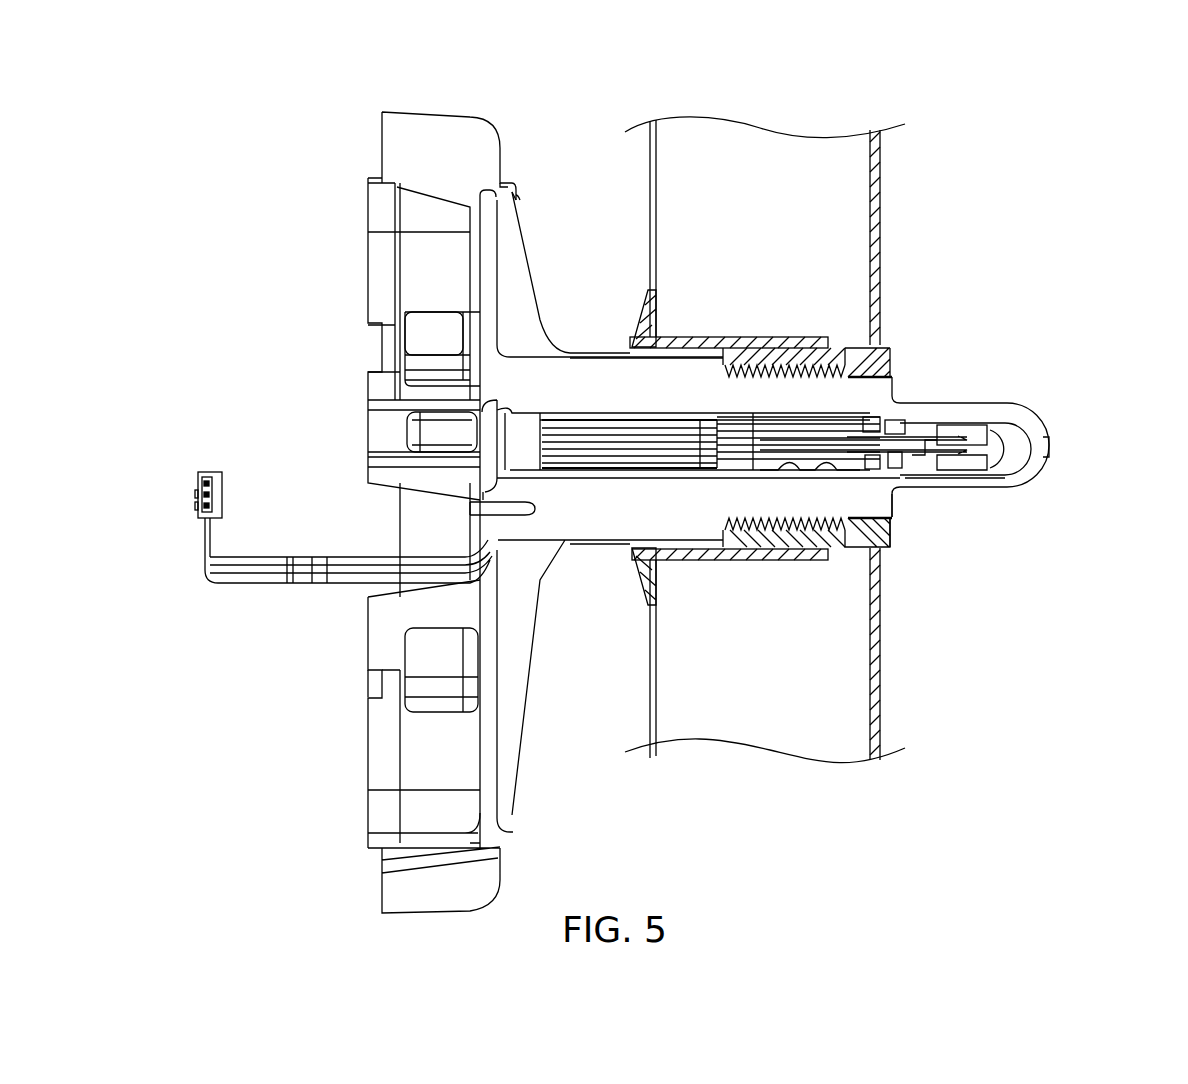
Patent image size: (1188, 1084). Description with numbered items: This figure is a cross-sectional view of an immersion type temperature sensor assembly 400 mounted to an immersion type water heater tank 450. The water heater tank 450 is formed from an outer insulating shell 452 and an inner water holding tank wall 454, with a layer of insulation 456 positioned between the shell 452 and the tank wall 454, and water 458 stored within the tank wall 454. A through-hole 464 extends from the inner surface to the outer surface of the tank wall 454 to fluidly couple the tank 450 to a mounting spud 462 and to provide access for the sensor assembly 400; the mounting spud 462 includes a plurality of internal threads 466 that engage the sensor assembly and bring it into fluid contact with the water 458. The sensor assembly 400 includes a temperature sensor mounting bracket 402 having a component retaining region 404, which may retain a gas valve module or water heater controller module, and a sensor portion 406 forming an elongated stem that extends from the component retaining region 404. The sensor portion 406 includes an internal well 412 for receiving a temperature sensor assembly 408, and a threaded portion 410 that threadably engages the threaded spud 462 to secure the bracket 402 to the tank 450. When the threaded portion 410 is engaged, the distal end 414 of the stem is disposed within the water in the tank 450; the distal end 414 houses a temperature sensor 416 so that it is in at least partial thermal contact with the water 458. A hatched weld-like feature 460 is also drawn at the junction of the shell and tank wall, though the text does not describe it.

The immersion type temperature sensor assembly 400 is at (352, 96).
The temperature sensor mounting bracket 402 is at (483, 118).
The component retaining region 404 is at (340, 337).
The sensor portion 406 is at (655, 585).
The temperature sensor assembly 408 is at (975, 425).
The threaded portion 410 is at (848, 375).
The internal well 412 is at (567, 480).
The distal end 414 is at (1032, 414).
The temperature sensor 416 is at (1010, 460).
The water heater tank 450 is at (893, 97).
The outer insulating shell 452 is at (650, 215).
The inner water holding tank wall 454 is at (880, 238).
The layer of insulation 456 is at (757, 145).
The water 458 is at (1092, 256).
The weld 460 is at (648, 308).
The mounting spud 462 is at (847, 538).
The through-hole 464 is at (882, 522).
The internal threads 466 is at (787, 547).